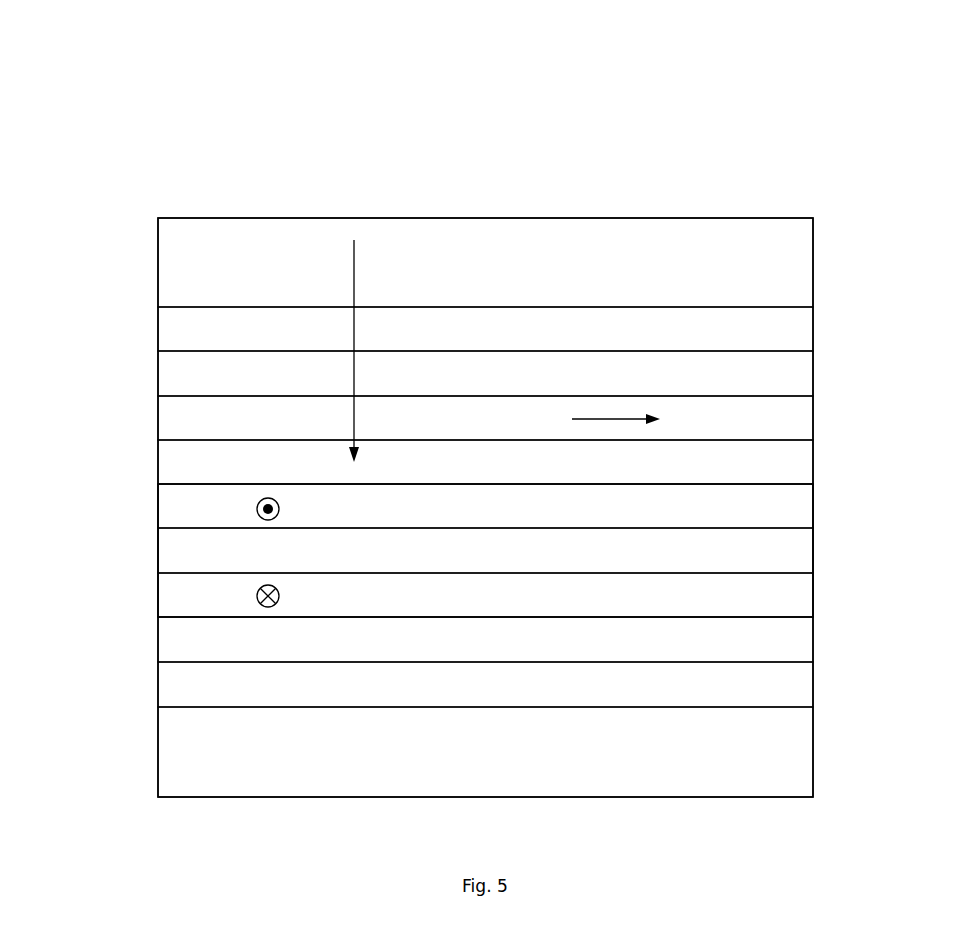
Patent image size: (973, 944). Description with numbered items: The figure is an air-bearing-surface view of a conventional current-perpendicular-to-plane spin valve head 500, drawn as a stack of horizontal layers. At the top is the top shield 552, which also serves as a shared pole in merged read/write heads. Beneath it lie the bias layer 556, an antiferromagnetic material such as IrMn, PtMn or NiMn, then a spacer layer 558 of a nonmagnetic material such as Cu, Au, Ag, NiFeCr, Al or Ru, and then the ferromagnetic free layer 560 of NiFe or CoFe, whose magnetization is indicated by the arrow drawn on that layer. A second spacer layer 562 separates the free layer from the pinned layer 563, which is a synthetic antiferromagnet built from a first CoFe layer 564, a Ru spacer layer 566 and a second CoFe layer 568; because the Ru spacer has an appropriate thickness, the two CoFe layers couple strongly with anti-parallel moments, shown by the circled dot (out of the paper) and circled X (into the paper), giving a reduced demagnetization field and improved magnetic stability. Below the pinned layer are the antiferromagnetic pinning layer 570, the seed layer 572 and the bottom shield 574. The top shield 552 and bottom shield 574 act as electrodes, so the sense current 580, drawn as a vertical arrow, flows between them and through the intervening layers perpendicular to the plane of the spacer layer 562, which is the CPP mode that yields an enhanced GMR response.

The spin valve head 500 is at (137, 129).
The top shield 552 is at (815, 284).
The bias layer 556 is at (815, 340).
The spacer layer 558 is at (815, 373).
The free layer 560 is at (815, 418).
The second spacer layer 562 is at (815, 462).
The pinned layer 563 is at (835, 617).
The first CoFe layer 564 is at (485, 506).
The Ru spacer layer 566 is at (485, 550).
The second CoFe layer 568 is at (485, 595).
The pinning layer 570 is at (815, 640).
The seed layer 572 is at (815, 695).
The bottom shield 574 is at (815, 740).
The sense current 580 is at (353, 283).